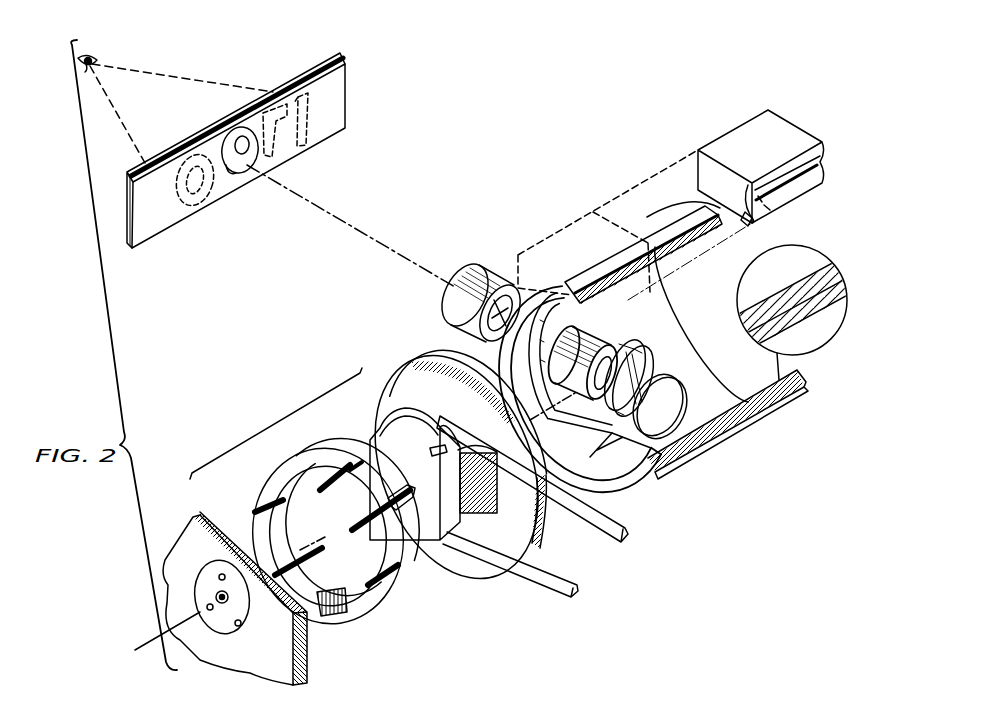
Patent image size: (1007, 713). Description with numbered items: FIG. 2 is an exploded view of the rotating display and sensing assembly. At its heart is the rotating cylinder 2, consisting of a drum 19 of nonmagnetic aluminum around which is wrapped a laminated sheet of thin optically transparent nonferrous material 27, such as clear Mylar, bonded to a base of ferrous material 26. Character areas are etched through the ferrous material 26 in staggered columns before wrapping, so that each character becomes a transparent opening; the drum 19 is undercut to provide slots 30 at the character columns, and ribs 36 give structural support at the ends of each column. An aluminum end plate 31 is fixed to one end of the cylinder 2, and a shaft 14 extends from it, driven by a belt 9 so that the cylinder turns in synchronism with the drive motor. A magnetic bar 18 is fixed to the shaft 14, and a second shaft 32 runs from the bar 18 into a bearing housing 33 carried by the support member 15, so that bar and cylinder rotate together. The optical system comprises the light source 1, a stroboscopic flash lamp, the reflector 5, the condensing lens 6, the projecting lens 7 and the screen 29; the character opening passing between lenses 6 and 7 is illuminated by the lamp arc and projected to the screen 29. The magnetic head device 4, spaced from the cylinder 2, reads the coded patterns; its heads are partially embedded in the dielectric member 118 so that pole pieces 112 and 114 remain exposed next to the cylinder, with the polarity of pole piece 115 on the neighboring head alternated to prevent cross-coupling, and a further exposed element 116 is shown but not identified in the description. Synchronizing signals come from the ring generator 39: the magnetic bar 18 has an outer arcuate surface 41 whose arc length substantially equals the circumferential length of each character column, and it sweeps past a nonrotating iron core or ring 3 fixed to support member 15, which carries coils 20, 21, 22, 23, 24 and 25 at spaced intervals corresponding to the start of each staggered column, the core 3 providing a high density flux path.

The light source 1 is at (637, 356).
The rotating cylinder 2 is at (646, 228).
The iron core or ring 3 is at (307, 458).
The magnetic head device 4 is at (732, 138).
The reflector 5 is at (665, 384).
The condensing lens 6 is at (593, 338).
The projecting lens 7 is at (500, 270).
The belt 9 is at (557, 580).
The shaft 14 is at (493, 503).
The support member 15 is at (257, 657).
The magnetic bar 18 is at (367, 461).
The drum 19 is at (823, 262).
The coil 20 is at (337, 463).
The coil 21 is at (380, 497).
The coil 22 is at (400, 582).
The coil 23 is at (320, 618).
The coil 24 is at (288, 540).
The coil 25 is at (253, 512).
The ferrous material 26 is at (812, 302).
The optically transparent nonferrous material 27 is at (838, 277).
The screen 29 is at (335, 82).
The slots 30 is at (682, 434).
The end plate 31 is at (408, 360).
The second shaft 32 is at (412, 505).
The bearing housing 33 is at (218, 622).
The ribs 36 is at (598, 486).
The ring generator device 39 is at (258, 430).
The outer arcuate surface 41 is at (393, 412).
The pole piece 112 is at (752, 215).
The pole piece 114 is at (768, 210).
The pole piece 115 is at (760, 181).
The slot 116 is at (772, 190).
The dielectric member 118 is at (797, 123).